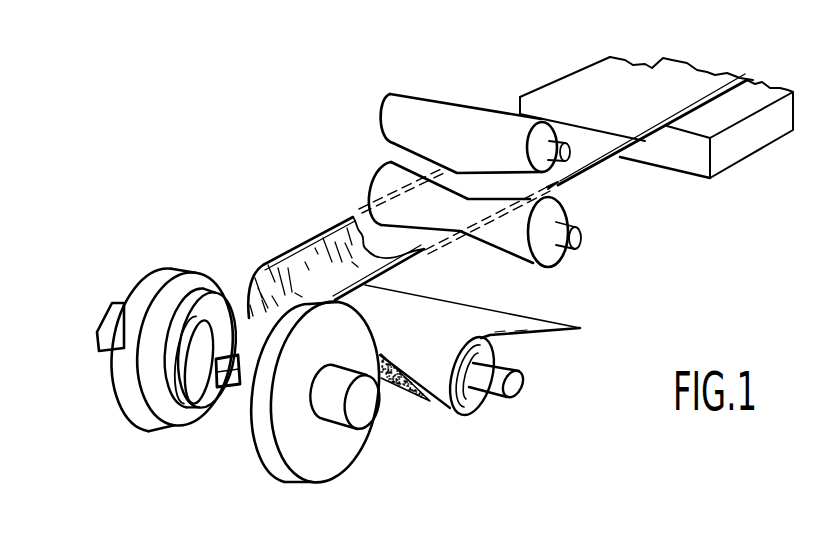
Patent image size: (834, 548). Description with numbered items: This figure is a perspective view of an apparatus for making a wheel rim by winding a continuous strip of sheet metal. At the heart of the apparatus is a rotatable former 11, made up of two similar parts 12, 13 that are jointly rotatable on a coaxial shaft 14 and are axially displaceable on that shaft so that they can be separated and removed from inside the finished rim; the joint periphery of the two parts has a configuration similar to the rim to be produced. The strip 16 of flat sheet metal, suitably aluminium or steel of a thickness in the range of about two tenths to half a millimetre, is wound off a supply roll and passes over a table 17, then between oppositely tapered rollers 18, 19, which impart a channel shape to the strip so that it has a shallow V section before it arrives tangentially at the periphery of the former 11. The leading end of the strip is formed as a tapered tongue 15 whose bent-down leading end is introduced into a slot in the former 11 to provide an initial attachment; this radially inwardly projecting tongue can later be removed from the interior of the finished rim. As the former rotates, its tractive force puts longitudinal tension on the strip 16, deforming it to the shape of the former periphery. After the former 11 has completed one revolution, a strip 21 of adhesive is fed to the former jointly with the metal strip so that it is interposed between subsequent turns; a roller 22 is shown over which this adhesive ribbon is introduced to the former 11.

The rotatable former 11 is at (158, 284).
The former part 12 is at (183, 403).
The former part 13 is at (327, 470).
The coaxial shaft 14 is at (337, 407).
The tapered tongue 15 is at (235, 357).
The strip 16 is at (683, 72).
The table 17 is at (683, 160).
The tapered roller 18 is at (463, 110).
The tapered roller 19 is at (510, 242).
The strip of adhesive 21 is at (430, 405).
The roller 22 is at (498, 357).